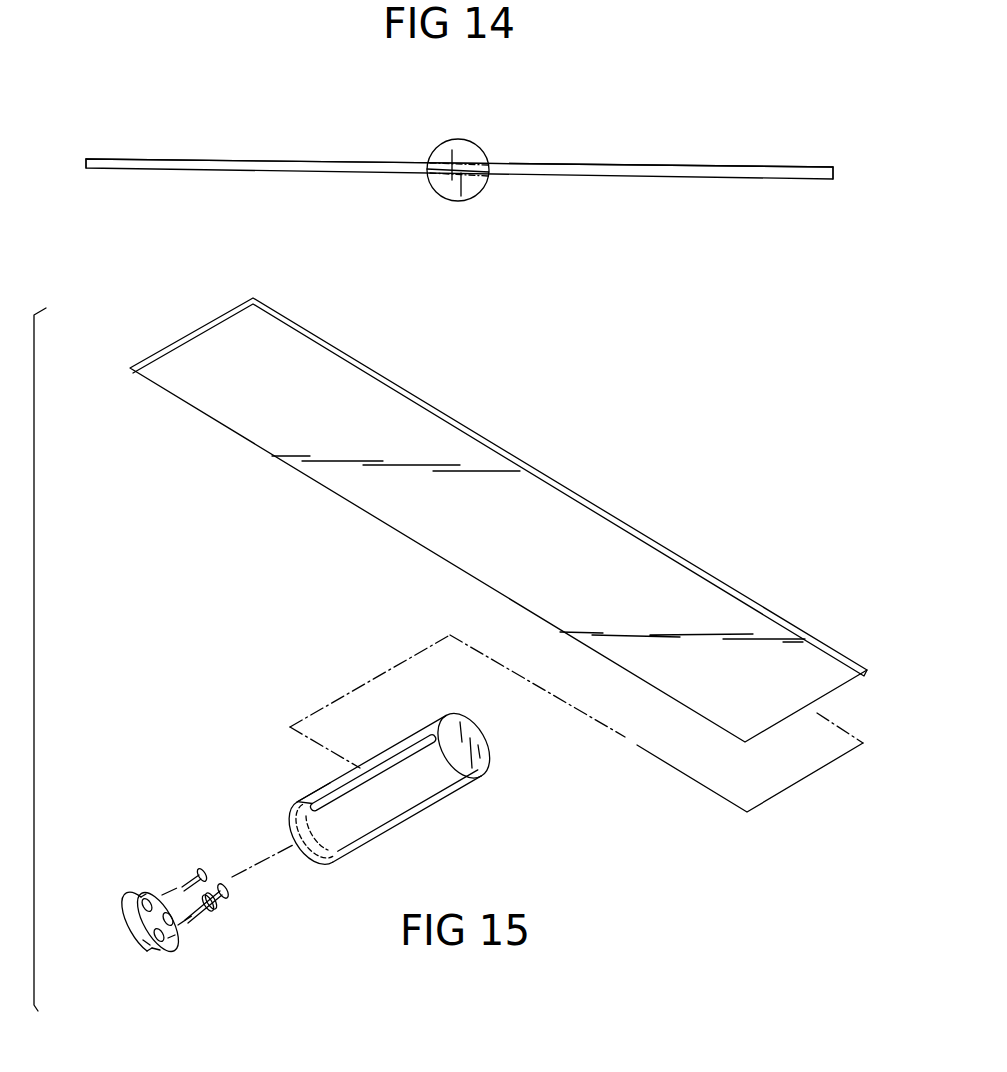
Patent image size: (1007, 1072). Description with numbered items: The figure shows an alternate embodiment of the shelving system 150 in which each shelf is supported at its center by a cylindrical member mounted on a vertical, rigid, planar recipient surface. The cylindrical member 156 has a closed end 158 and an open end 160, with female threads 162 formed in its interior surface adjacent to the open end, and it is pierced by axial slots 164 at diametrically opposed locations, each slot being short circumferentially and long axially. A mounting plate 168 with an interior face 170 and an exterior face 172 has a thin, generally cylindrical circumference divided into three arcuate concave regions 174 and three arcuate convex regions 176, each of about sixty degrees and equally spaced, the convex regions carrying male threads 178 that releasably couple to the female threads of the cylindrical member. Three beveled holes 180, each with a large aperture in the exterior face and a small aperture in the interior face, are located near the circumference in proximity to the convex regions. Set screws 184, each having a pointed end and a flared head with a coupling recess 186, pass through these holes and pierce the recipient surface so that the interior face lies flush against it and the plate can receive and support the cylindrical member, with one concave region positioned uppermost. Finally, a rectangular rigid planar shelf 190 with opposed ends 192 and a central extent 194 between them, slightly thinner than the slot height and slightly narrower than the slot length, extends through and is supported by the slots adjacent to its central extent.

In FIG. 14, the shelving system 150 is at (614, 135).
In FIG. 15, the cylindrical member 156 is at (423, 808).
In FIG. 15, the closed end 158 is at (483, 750).
In FIG. 15, the open end 160 is at (303, 858).
In FIG. 15, the female threads 162 is at (297, 807).
In FIG. 14, the axial slots 164 is at (430, 173).
In FIG. 15, the axial slots 164 is at (318, 800).
In FIG. 15, the mounting plate 168 is at (138, 920).
In FIG. 15, the interior face 170 is at (170, 938).
In FIG. 15, the exterior face 172 is at (143, 940).
In FIG. 15, the arcuate concave regions 174 is at (157, 893).
In FIG. 15, the arcuate convex regions 176 is at (155, 950).
In FIG. 15, the male threads 178 is at (130, 897).
In FIG. 15, the beveled holes 180 is at (143, 895).
In FIG. 15, the set screws 184 is at (210, 918).
In FIG. 15, the coupling recess 186 is at (196, 867).
In FIG. 14, the shelf 190 is at (247, 163).
In FIG. 15, the shelf 190 is at (712, 577).
In FIG. 14, the opposed ends 192 is at (85, 166).
In FIG. 15, the opposed ends 192 is at (183, 340).
In FIG. 14, the central extent 194 is at (448, 168).
In FIG. 15, the central extent 194 is at (585, 552).